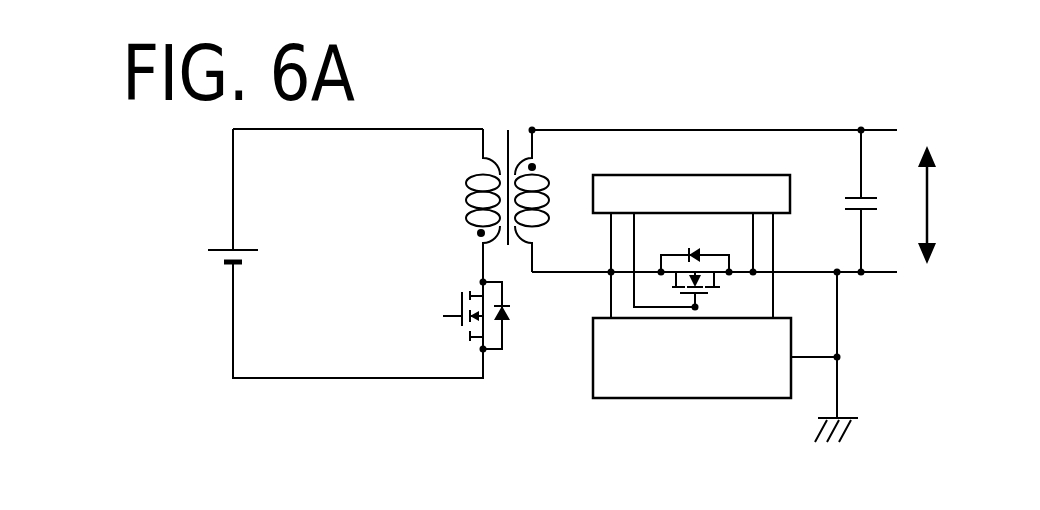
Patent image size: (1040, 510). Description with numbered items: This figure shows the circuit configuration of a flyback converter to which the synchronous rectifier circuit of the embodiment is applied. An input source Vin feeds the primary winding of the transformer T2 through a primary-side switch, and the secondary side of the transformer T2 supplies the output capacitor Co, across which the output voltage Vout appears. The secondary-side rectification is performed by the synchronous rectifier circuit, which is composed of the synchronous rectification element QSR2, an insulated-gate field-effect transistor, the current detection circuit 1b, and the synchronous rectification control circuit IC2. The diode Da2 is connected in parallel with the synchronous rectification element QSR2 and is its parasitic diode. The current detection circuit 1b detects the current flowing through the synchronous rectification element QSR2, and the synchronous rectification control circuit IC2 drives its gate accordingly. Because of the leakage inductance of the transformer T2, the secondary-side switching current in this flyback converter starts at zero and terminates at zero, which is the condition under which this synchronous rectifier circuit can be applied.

The current detection circuit 1b is at (745, 174).
The synchronous rectification control circuit IC2 is at (592, 333).
The diode Da2 is at (690, 253).
The synchronous rectification element QSR2 is at (703, 265).
The transformer T2 is at (507, 188).
The output capacitor Co is at (872, 201).
The input voltage source Vin is at (246, 195).
The output voltage Vout is at (955, 205).